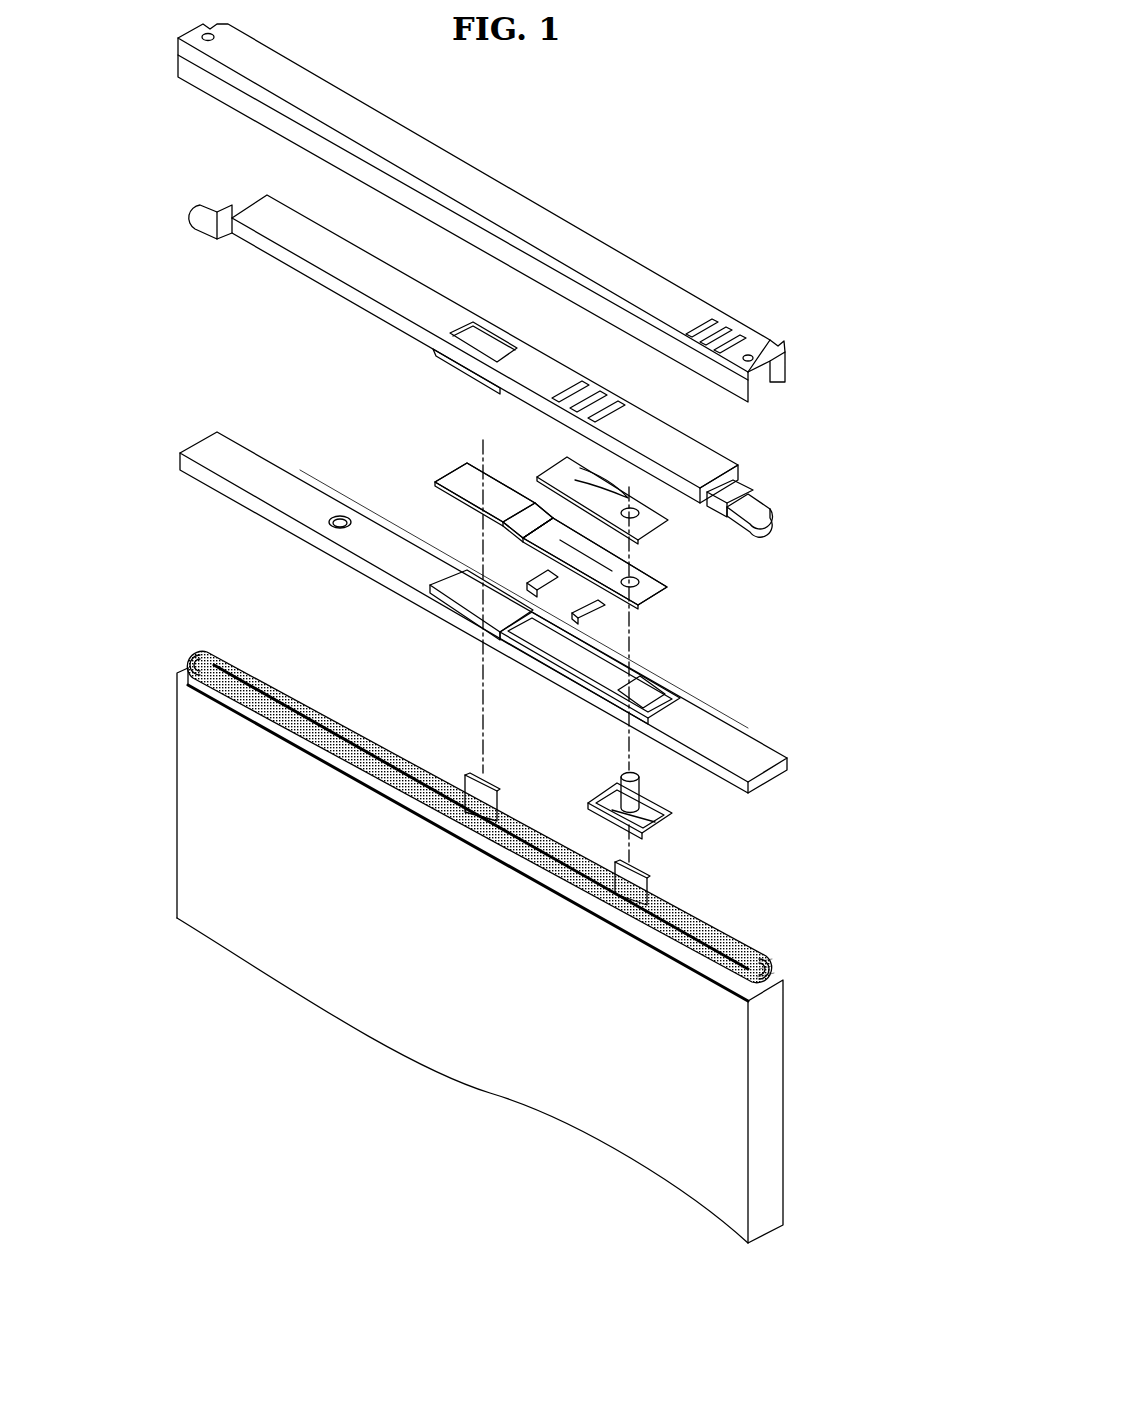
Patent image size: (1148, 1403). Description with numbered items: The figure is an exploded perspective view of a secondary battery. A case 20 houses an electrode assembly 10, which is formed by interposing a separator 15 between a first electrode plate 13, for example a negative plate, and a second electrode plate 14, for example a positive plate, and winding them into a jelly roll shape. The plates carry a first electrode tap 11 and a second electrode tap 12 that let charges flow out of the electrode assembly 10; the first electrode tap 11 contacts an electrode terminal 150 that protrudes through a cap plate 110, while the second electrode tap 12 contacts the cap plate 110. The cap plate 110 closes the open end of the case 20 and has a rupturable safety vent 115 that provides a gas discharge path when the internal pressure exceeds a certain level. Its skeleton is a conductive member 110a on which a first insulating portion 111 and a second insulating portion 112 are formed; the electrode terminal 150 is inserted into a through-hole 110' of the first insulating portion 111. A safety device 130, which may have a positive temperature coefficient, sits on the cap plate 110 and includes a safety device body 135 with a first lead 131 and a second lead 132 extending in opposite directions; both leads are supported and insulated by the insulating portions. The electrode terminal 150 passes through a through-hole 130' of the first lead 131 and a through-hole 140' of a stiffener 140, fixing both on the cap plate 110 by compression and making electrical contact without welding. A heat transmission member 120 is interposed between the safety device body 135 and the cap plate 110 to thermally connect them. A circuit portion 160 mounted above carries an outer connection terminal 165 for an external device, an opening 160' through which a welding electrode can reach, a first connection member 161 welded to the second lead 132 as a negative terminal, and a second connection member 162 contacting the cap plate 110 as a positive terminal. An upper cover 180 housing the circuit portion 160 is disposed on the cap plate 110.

The electrode assembly 10 is at (858, 930).
The first electrode tap 11 is at (642, 875).
The second electrode tap 12 is at (492, 788).
The first electrode plate 13 is at (770, 961).
The second electrode plate 14 is at (772, 973).
The separator 15 is at (770, 966).
The case 20 is at (767, 1100).
The cap plate 110 is at (544, 612).
The through-hole 110' is at (671, 679).
The conductive member 110a is at (752, 744).
The first insulating portion 111 is at (672, 694).
The second insulating portion 112 is at (456, 590).
The safety vent 115 is at (342, 518).
The heat transmission member 120 is at (598, 612).
The safety device 130 is at (621, 570).
The through-hole 130' is at (656, 564).
The first lead 131 is at (665, 590).
The second lead 132 is at (446, 481).
The safety device body 135 is at (565, 552).
The stiffener 140 is at (635, 509).
The through-hole 140' is at (567, 470).
The electrode terminal 150 is at (666, 815).
The circuit portion 160 is at (535, 349).
The opening 160' is at (486, 321).
The first connection member 161 is at (437, 353).
The second connection member 162 is at (209, 214).
The outer connection terminal 165 is at (576, 386).
The upper cover 180 is at (178, 47).